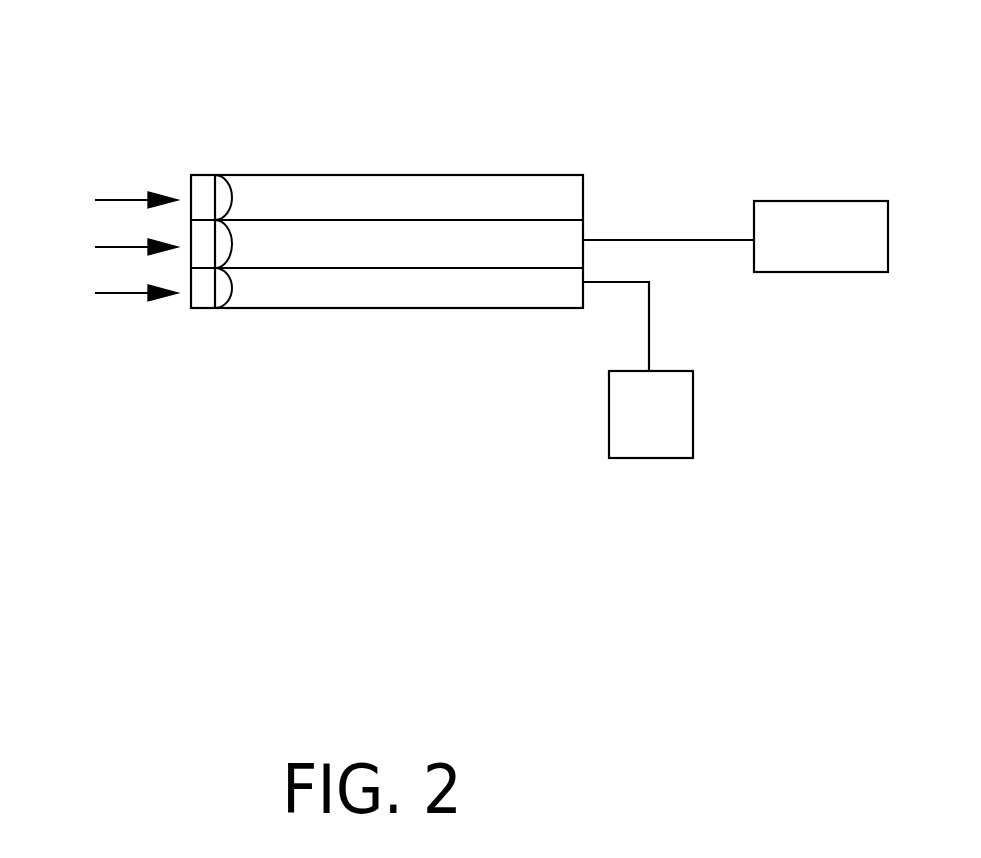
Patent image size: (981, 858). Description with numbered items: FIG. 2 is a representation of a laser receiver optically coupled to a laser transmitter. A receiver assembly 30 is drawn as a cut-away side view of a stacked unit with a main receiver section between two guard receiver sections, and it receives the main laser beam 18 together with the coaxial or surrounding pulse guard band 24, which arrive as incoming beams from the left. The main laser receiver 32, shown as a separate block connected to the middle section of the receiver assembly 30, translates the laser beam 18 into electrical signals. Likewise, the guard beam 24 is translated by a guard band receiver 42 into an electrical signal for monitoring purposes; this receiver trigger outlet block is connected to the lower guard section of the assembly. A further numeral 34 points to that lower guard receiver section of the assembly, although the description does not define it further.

The receiver assembly 30 is at (606, 107).
The pulse guard band 24 is at (112, 200).
The main laser beam 18 is at (100, 247).
The main laser receiver 32 is at (780, 201).
The guard receiver 34 is at (539, 292).
The guard band receiver 42 is at (670, 371).